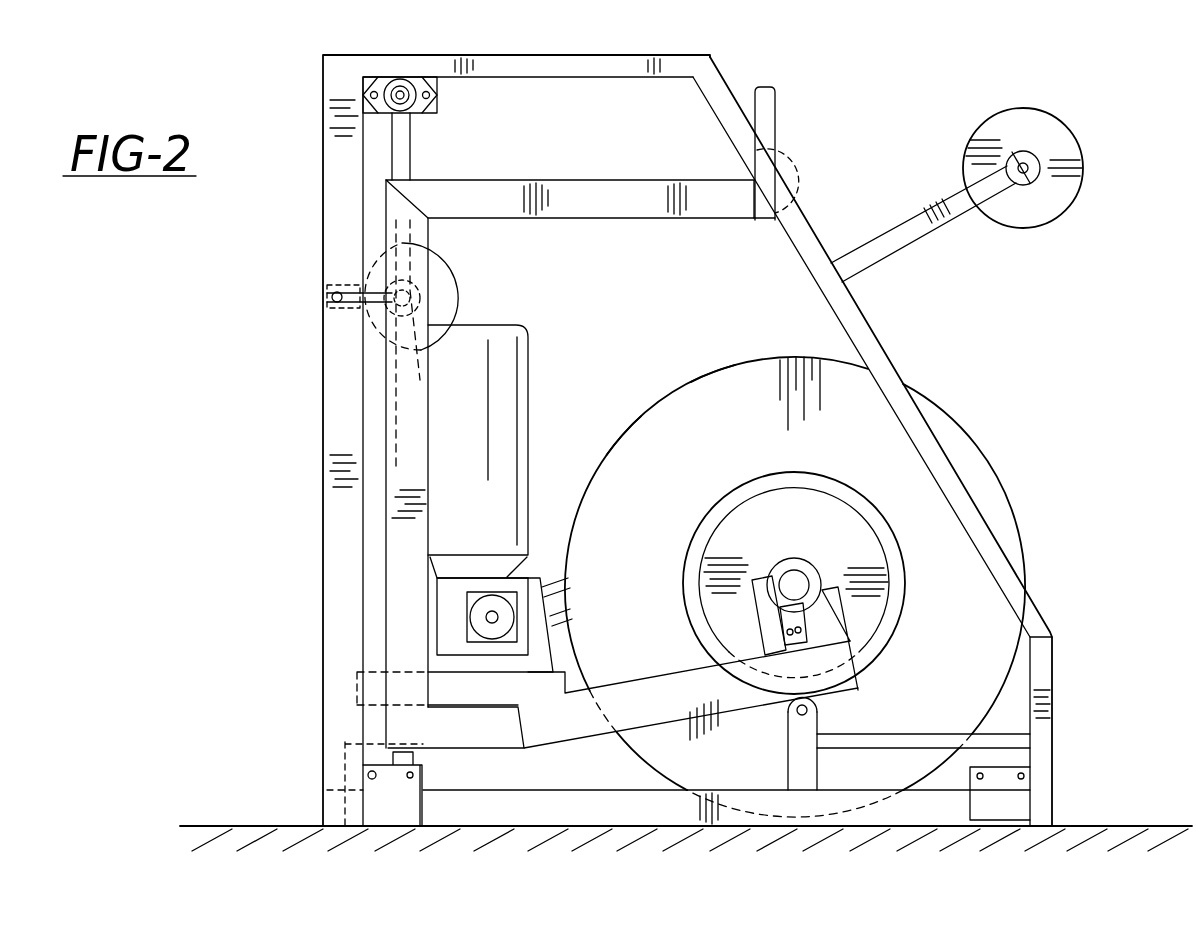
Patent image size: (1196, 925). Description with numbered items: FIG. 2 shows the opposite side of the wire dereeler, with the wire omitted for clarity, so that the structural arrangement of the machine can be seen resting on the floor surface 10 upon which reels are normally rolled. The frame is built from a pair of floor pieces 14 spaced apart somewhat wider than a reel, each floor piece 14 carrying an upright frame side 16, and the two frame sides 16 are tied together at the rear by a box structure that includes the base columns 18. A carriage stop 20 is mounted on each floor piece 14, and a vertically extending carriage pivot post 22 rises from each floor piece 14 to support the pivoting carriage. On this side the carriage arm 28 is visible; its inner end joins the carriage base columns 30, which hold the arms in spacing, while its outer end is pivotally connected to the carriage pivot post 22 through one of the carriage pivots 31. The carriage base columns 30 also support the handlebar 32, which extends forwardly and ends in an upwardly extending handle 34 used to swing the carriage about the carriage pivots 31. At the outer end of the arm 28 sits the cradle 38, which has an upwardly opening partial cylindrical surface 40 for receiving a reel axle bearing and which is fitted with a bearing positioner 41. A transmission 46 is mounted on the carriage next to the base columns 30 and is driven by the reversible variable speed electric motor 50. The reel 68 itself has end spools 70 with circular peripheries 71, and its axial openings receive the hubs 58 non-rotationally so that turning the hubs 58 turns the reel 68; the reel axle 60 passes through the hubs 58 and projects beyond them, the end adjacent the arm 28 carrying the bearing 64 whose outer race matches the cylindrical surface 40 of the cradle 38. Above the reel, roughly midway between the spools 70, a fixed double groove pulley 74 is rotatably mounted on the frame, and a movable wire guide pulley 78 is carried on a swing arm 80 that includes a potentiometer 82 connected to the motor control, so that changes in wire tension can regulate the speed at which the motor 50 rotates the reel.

The floor surface 10 is at (247, 826).
The floor pieces 14 is at (628, 820).
The frame side 16 is at (928, 445).
The base columns 18 is at (323, 455).
The carriage stop 20 is at (404, 762).
The carriage pivot post 22 is at (792, 765).
The arm 28 is at (678, 703).
The base columns 30 is at (400, 575).
The carriage pivots 31 is at (815, 718).
The handlebar 32 is at (588, 188).
The handle 34 is at (775, 125).
The cradle 38 is at (837, 633).
The partial cylindrical surface 40 is at (840, 608).
The bearing positioner 41 is at (787, 625).
The transmission 46 is at (453, 598).
The reversible variable speed electric motor 50 is at (482, 440).
The hubs 58 is at (735, 525).
The reel axle 60 is at (803, 582).
The bearing 64 is at (787, 570).
The reel 68 is at (712, 356).
The end spools 70 is at (646, 553).
The circular peripheries 71 is at (620, 432).
The fixed double groove pulley 74 is at (1038, 210).
The movable wire guide pulley 78 is at (447, 282).
The swing arm 80 is at (403, 158).
The potentiometer 82 is at (418, 80).